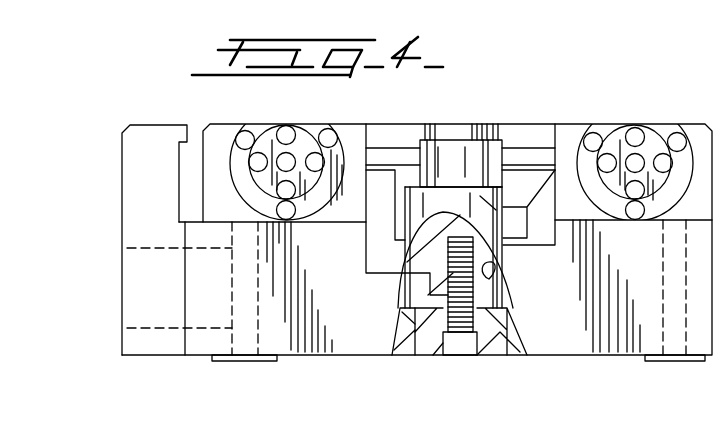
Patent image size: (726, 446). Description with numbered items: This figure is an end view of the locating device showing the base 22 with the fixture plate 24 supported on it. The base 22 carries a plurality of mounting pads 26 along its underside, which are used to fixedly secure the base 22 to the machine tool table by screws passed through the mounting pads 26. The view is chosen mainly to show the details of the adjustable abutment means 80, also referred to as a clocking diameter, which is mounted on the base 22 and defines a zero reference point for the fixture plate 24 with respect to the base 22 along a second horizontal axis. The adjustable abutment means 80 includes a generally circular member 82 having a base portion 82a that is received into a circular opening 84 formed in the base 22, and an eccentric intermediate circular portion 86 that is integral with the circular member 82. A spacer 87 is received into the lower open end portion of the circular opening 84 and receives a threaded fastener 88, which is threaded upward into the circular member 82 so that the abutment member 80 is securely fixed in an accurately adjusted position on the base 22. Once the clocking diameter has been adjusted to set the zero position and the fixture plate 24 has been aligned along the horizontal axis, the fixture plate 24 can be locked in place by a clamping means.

The base 22 is at (608, 356).
The fixture plate 24 is at (582, 122).
The mounting pads 26 is at (250, 362).
The adjustable abutment means 80 is at (480, 122).
The circular member 82 is at (447, 158).
The base portion 82a is at (430, 293).
The circular opening 84 is at (495, 277).
The eccentric intermediate circular portion 86 is at (488, 203).
The spacer 87 is at (492, 356).
The threaded fastener 88 is at (455, 347).